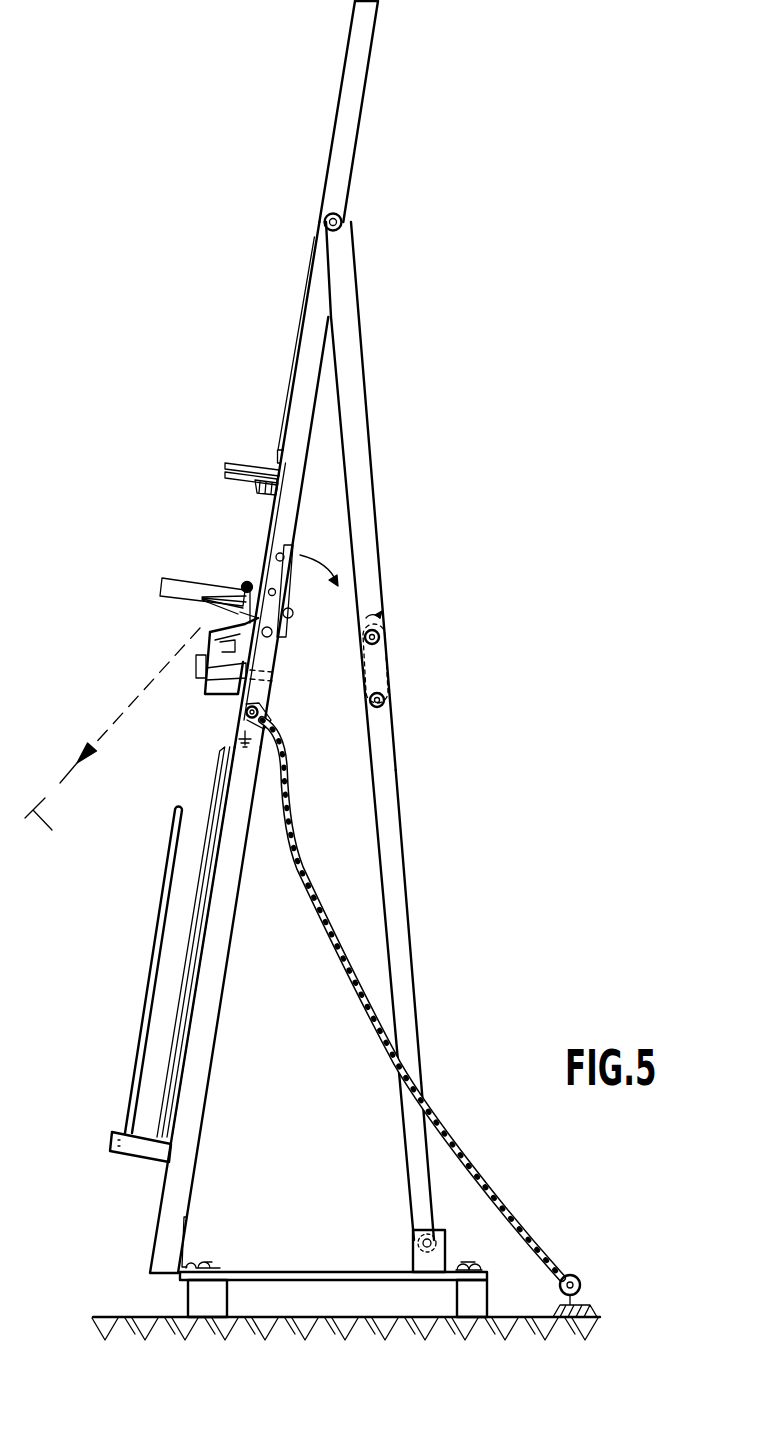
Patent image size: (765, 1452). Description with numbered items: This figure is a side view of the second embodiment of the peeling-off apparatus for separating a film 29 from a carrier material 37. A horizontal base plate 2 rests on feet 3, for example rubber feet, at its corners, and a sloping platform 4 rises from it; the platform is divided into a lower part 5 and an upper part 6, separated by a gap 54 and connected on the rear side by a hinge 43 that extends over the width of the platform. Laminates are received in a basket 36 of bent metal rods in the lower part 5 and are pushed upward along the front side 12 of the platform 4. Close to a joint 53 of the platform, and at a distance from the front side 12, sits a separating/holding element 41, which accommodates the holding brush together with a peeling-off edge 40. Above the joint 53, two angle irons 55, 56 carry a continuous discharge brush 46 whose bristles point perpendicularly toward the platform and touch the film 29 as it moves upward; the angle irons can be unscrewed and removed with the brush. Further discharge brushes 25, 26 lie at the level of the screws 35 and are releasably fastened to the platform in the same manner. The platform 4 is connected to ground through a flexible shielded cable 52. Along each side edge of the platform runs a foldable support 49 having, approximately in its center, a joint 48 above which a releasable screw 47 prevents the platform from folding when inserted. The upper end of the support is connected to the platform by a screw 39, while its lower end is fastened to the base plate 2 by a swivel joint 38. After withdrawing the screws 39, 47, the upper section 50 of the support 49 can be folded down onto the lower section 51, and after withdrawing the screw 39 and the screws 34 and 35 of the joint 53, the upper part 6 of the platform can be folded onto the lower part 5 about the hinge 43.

The base plate 2 is at (341, 1283).
The feet 3 is at (193, 1293).
The sloping platform 4 is at (345, 118).
The lower part of the platform 5 is at (199, 1080).
The upper part of the platform 6 is at (300, 430).
The front side of the platform 12 is at (322, 190).
The discharge brush 25 is at (202, 602).
The discharge brush 26 is at (224, 605).
The film 29 is at (297, 340).
The screw of the joint 34 is at (286, 556).
The screw of the joint 35 is at (283, 592).
The basket 36 is at (162, 917).
The carrier material 37 is at (112, 748).
The swivel joint 38 is at (432, 1242).
The screw 39 is at (343, 221).
The peeling-off edge 40 is at (246, 583).
The separating/holding element 41 is at (207, 702).
The hinge 43 is at (294, 622).
The discharge brush 46 is at (260, 493).
The releasable screw 47 is at (380, 634).
The joint 48 is at (386, 697).
The support 49 is at (387, 667).
The upper section of the support 50 is at (360, 410).
The lower section of the support 51 is at (403, 908).
The flexible shielded cable 52 is at (362, 1018).
The joint of the platform 53 is at (253, 679).
The gap 54 is at (294, 609).
The angle iron 55 is at (276, 462).
The angle iron 56 is at (251, 478).